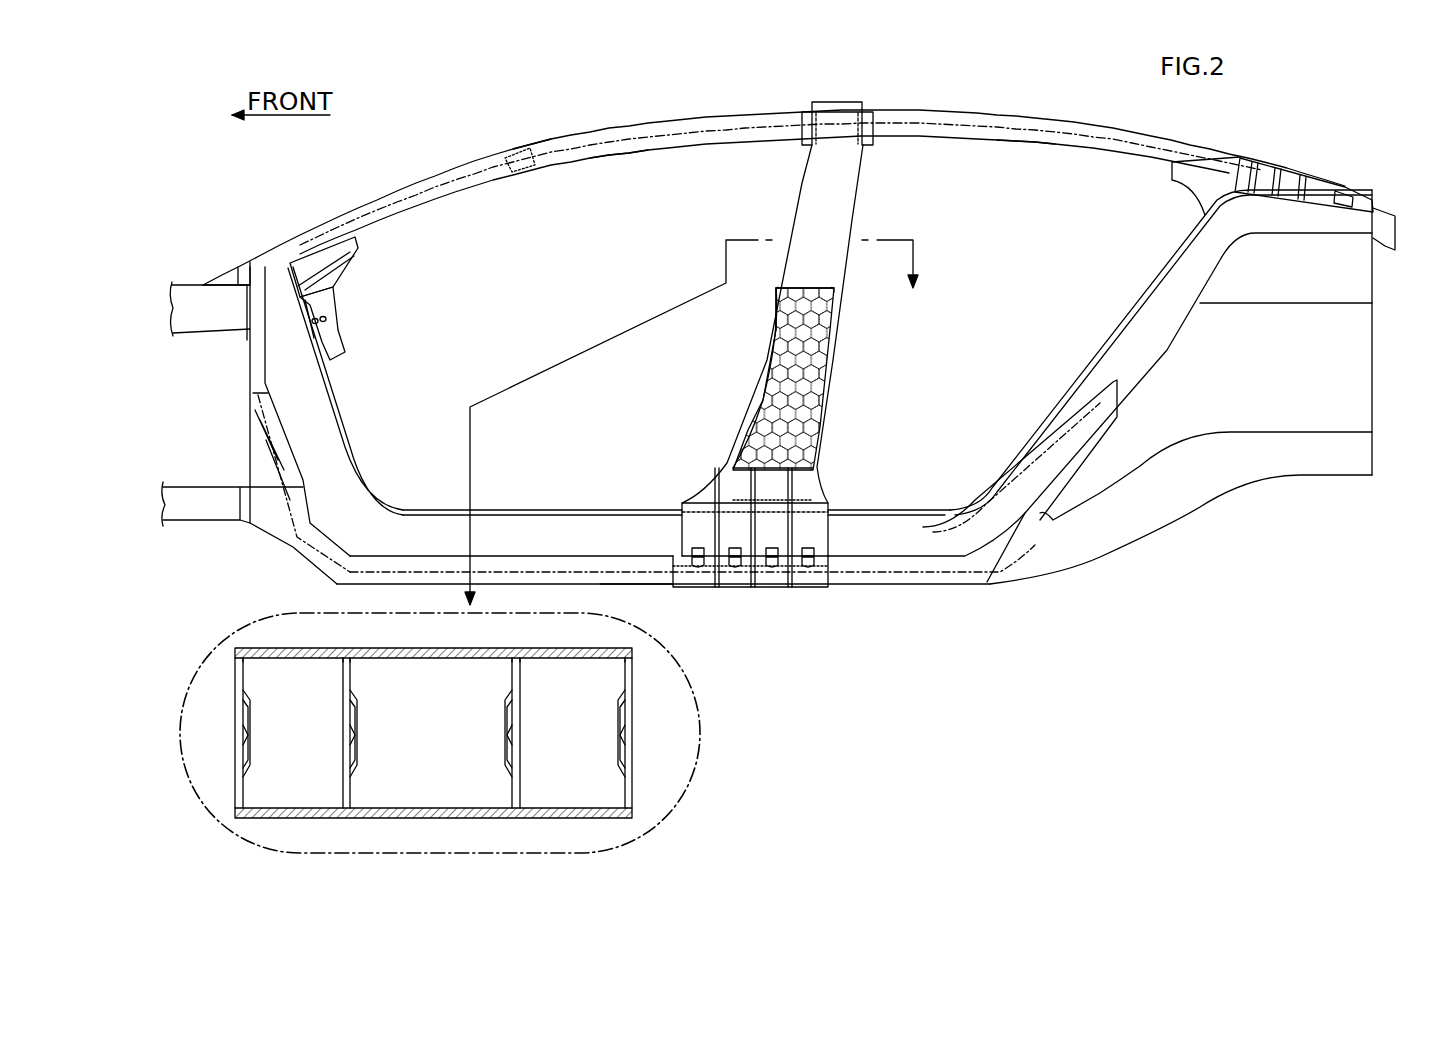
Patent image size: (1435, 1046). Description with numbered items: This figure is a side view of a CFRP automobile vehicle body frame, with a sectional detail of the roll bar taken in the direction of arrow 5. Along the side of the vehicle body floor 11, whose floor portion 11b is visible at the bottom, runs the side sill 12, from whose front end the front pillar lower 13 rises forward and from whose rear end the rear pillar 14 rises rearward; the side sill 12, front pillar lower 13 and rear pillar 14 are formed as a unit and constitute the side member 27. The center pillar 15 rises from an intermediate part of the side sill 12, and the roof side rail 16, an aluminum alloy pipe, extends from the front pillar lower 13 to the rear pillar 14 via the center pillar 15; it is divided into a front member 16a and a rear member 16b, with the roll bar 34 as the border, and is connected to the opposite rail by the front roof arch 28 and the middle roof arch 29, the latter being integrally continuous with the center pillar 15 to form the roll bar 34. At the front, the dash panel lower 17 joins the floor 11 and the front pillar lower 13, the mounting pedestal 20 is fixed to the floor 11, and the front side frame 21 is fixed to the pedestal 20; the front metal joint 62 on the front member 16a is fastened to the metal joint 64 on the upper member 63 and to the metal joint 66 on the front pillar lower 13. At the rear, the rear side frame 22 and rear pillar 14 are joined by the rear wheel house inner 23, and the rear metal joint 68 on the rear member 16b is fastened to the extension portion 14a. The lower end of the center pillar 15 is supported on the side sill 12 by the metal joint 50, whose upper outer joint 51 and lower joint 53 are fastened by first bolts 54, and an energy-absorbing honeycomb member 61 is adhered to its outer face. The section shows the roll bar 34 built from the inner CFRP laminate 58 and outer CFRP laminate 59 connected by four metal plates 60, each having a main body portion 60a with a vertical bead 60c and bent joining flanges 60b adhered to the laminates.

The arrow 5 is at (766, 99).
The vehicle body floor 11 is at (897, 588).
The floor portion 11b is at (638, 580).
The side sill 12 is at (567, 527).
The front pillar lower 13 is at (325, 432).
The rear pillar 14 is at (1093, 348).
The extension portion 14a is at (1293, 220).
The center pillar 15 is at (810, 222).
The roof side rail 16 is at (945, 109).
The front member 16a is at (621, 147).
The rear member 16b is at (1023, 142).
The dash panel lower 17 is at (255, 360).
The mounting pedestal 20 is at (247, 528).
The front side frame 21 is at (205, 498).
The rear side frame 22 is at (1218, 486).
The rear wheel house inner 23 is at (1365, 385).
The side member 27 is at (610, 508).
The front roof arch 28 is at (535, 153).
The middle roof arch 29 is at (838, 103).
The roll bar 34 is at (855, 213).
The metal joint 50 is at (832, 493).
The upper outer joint 51 is at (705, 518).
The lower joint 53 is at (770, 578).
The first bolt 54 is at (737, 547).
The inner CFRP laminate 58 is at (440, 658).
The outer CFRP laminate 59 is at (757, 388).
The metal plate 60 is at (363, 728).
The main body portion 60a is at (237, 738).
The joining flange 60b is at (275, 660).
The bead 60c is at (248, 755).
The energy-absorbing member 61 is at (808, 368).
The front metal joint 62 is at (275, 260).
The upper member 63 is at (193, 292).
The metal joint 64 is at (220, 279).
The metal joint 66 is at (337, 346).
The rear metal joint 68 is at (1290, 183).